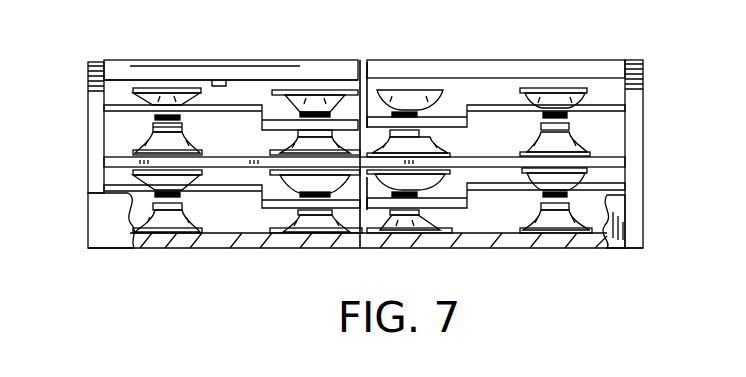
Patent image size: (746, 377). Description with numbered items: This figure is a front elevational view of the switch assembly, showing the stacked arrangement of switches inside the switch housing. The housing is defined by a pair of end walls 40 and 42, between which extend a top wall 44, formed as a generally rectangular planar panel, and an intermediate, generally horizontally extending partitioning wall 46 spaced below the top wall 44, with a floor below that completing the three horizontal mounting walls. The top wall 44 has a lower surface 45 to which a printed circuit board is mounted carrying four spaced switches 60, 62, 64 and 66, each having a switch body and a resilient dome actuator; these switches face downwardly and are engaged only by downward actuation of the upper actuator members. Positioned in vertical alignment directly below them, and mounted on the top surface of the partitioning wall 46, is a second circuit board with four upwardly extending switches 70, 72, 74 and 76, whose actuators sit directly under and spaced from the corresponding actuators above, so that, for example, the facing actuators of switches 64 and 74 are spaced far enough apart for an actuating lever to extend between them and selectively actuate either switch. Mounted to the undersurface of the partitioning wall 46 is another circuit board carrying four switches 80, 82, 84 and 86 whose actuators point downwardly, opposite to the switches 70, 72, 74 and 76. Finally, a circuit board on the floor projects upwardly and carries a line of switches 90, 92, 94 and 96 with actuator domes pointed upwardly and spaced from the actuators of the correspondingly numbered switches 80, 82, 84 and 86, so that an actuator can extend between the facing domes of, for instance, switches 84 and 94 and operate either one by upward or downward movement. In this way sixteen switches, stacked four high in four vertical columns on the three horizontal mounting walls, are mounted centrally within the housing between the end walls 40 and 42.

The end wall 40 is at (640, 103).
The end wall 42 is at (88, 113).
The top wall 44 is at (250, 85).
The lower surface 45 is at (226, 92).
The partitioning wall 46 is at (462, 102).
The switch 60 is at (115, 84).
The switch 62 is at (326, 109).
The switch 64 is at (466, 96).
The switch 66 is at (585, 95).
The switch 70 is at (140, 152).
The switch 72 is at (299, 148).
The switch 74 is at (495, 157).
The switch 76 is at (580, 142).
The switch 80 is at (130, 207).
The switch 82 is at (348, 191).
The switch 84 is at (445, 181).
The switch 86 is at (608, 196).
The switch 90 is at (205, 234).
The switch 92 is at (262, 234).
The switch 94 is at (452, 234).
The switch 96 is at (598, 232).